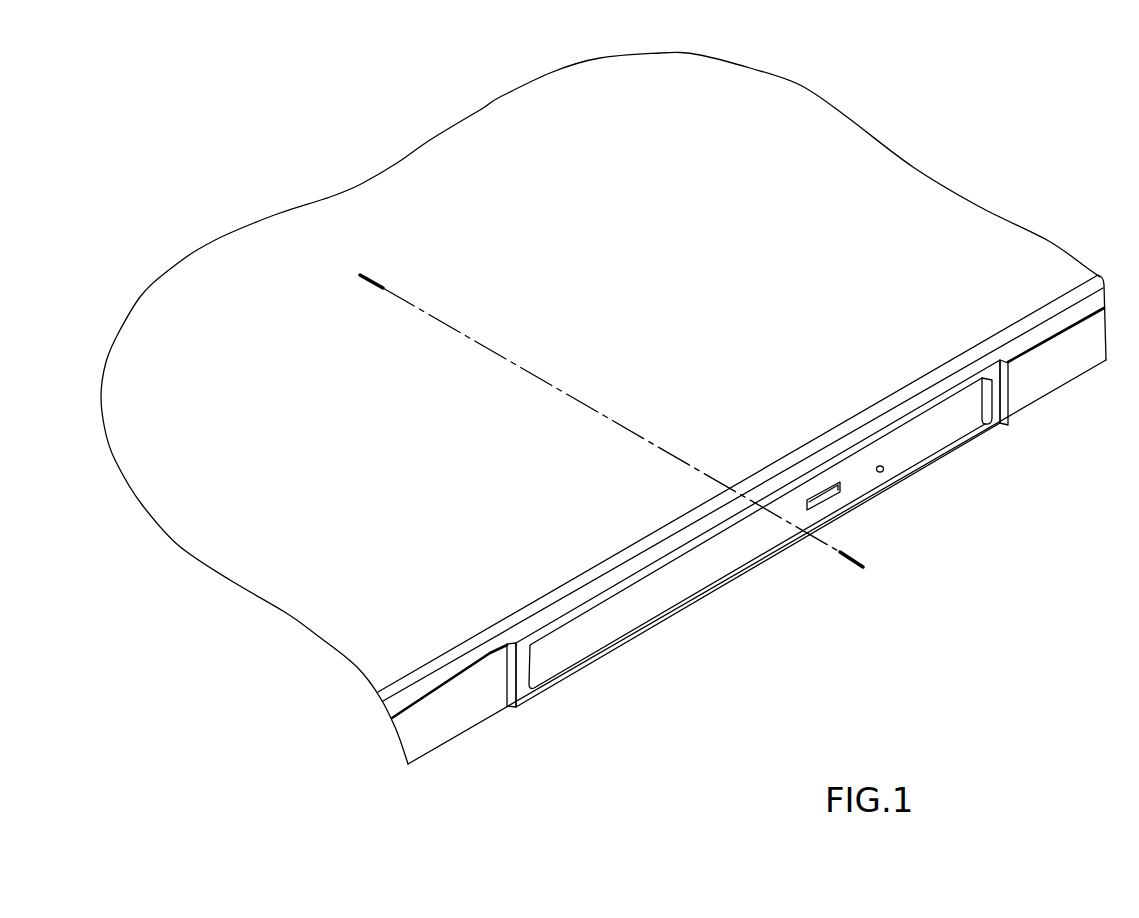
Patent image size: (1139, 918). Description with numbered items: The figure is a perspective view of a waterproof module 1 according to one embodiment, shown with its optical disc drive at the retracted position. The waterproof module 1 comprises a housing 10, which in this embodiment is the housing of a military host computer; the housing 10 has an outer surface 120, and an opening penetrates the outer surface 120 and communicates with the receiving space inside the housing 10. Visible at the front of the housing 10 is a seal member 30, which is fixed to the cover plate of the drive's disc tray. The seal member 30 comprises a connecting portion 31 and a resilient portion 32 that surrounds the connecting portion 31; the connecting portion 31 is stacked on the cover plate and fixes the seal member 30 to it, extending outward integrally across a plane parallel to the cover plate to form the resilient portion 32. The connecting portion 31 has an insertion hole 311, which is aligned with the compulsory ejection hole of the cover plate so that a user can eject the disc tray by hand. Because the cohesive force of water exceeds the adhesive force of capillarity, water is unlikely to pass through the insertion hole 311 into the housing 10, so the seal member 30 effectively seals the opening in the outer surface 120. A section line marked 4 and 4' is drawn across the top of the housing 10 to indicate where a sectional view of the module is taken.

The waterproof module 1 is at (620, 408).
The housing 10 is at (620, 408).
The outer surface 120 is at (1050, 371).
The seal member 30 is at (757, 536).
The connecting portion 31 is at (758, 536).
The resilient portion 32 is at (722, 583).
The insertion hole 311 is at (886, 475).
The section line 4-4' 4 is at (581, 413).
The section line 4- 4' is at (831, 575).